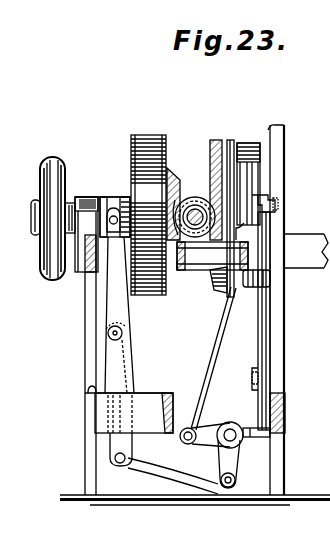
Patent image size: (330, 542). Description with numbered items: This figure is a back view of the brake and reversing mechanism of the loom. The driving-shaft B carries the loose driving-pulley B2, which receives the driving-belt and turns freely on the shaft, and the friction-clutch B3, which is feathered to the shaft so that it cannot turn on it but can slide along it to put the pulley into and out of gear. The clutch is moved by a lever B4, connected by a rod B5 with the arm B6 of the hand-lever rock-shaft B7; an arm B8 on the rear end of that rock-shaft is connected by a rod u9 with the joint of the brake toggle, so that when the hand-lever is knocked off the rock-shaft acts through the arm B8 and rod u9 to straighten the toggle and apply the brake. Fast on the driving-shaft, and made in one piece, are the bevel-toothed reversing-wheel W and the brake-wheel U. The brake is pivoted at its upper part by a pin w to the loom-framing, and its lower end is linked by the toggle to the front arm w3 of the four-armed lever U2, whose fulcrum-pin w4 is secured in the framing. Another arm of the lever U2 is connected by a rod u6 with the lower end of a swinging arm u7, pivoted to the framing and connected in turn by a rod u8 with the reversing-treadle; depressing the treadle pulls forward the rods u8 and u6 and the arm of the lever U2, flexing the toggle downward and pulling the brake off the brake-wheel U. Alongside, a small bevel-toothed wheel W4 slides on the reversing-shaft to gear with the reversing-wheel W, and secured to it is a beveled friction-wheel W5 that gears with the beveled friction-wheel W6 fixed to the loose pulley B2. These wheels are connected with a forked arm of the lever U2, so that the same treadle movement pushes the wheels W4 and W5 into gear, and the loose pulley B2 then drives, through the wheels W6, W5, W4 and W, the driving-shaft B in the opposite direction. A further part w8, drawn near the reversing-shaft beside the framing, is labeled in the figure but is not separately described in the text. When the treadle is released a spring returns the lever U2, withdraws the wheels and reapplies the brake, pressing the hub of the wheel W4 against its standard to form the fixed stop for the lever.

The driving-shaft B is at (32, 219).
The loose driving-pulley B2 is at (148, 215).
The friction-clutch B3 is at (121, 160).
The lever B4 is at (120, 327).
The rod B5 is at (173, 476).
The arm B6 is at (229, 464).
The hand-lever rock-shaft B7 is at (243, 437).
The arm B8 is at (211, 430).
The bevel-toothed reversing-wheel W is at (210, 186).
The small bevel-toothed wheel W4 is at (205, 195).
The beveled friction-wheel W5 is at (193, 203).
The beveled friction-wheel W6 is at (186, 196).
The pin w is at (232, 150).
The front arm of lever U2 w3 is at (242, 231).
The fulcrum-pin w4 is at (178, 268).
The knurled cylinder w8 is at (273, 283).
The brake-wheel U is at (245, 184).
The four-armed lever U2 is at (212, 256).
The rod u6 is at (256, 321).
The swinging arm u7 is at (252, 384).
The rod u8 is at (230, 292).
The rod u9 is at (213, 358).